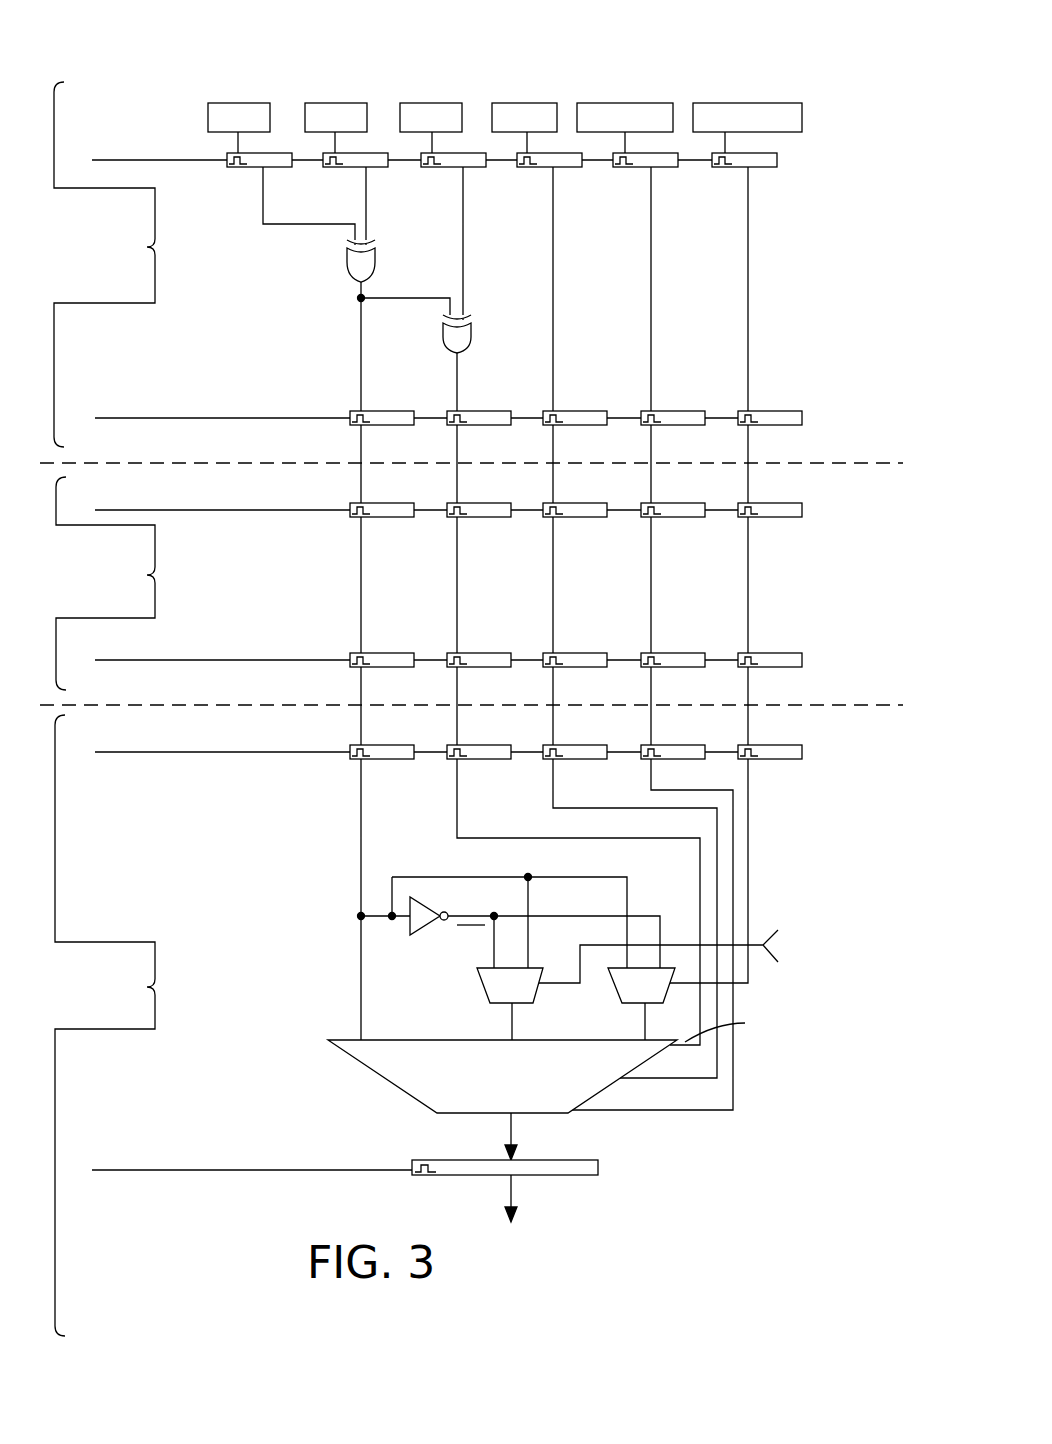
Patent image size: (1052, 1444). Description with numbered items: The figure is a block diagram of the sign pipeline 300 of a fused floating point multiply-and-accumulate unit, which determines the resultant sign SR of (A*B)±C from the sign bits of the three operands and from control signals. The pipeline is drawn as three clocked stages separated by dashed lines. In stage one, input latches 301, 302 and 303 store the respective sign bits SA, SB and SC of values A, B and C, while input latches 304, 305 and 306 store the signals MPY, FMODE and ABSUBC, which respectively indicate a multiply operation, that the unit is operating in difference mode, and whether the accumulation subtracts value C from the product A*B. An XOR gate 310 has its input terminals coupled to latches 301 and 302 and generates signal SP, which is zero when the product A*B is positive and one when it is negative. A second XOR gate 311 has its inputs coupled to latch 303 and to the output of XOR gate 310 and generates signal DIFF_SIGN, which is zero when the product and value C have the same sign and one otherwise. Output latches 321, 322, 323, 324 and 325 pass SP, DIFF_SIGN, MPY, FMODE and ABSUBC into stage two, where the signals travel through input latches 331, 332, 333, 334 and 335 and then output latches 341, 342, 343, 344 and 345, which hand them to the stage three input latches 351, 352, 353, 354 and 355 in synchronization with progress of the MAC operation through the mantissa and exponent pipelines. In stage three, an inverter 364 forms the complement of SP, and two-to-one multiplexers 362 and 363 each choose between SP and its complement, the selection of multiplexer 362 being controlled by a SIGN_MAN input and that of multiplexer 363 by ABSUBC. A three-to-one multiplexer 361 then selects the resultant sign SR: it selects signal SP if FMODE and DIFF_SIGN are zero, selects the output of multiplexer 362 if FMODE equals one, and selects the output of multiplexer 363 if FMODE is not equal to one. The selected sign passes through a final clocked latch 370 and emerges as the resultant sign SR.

The sign pipeline 300 is at (206, 43).
The input latch 301 is at (272, 167).
The input latch 302 is at (368, 167).
The input latch 303 is at (466, 167).
The input latch 304 is at (562, 167).
The input latch 305 is at (658, 167).
The input latch 306 is at (757, 167).
The XOR gate 310 is at (375, 262).
The XOR gate 311 is at (471, 335).
The output latch 321 is at (355, 411).
The output latch 322 is at (450, 411).
The output latch 323 is at (568, 411).
The output latch 324 is at (666, 411).
The output latch 325 is at (763, 411).
The latch 331 is at (375, 503).
The latch 332 is at (472, 503).
The latch 333 is at (568, 503).
The latch 334 is at (666, 503).
The latch 335 is at (763, 503).
The output latch 341 is at (375, 653).
The output latch 342 is at (472, 653).
The output latch 343 is at (568, 653).
The output latch 344 is at (666, 653).
The output latch 345 is at (763, 653).
The input latch 351 is at (375, 745).
The input latch 352 is at (472, 745).
The input latch 353 is at (568, 745).
The input latch 354 is at (666, 745).
The input latch 355 is at (763, 745).
The multiplexer 361 is at (330, 1040).
The multiplexer 362 is at (483, 968).
The multiplexer 363 is at (615, 988).
The inverter 364 is at (428, 903).
The output latch 370 is at (572, 1160).